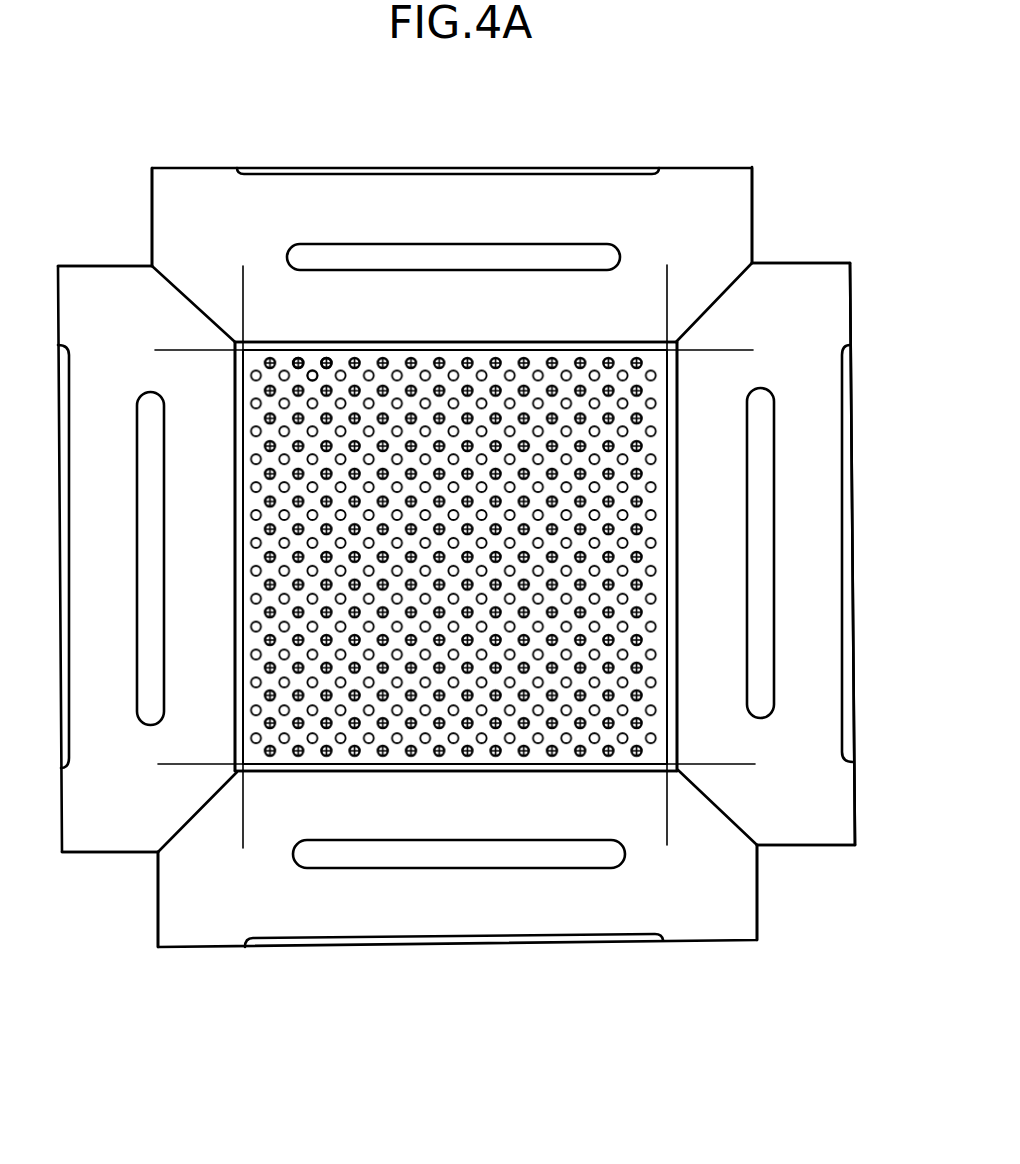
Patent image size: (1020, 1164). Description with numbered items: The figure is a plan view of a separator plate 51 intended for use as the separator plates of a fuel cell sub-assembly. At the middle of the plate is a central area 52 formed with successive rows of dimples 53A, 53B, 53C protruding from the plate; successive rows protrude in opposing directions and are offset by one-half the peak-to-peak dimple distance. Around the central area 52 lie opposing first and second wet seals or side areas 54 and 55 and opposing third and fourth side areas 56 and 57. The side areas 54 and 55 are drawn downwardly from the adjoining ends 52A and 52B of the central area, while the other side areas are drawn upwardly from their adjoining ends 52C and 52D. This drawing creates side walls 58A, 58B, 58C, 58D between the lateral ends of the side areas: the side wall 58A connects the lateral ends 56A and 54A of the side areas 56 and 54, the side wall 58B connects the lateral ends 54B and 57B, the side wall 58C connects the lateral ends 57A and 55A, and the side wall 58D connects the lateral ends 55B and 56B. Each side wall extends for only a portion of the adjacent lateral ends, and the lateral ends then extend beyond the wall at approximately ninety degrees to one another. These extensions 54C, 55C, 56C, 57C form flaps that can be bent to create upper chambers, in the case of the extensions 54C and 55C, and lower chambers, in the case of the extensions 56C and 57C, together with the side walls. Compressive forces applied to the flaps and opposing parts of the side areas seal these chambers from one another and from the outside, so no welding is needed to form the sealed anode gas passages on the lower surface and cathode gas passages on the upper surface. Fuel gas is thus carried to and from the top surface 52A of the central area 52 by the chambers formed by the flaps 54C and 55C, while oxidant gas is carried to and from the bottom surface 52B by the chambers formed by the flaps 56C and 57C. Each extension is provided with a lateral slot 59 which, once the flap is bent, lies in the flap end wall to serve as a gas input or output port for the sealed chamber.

The separator plate 51 is at (543, 151).
The central area 52 is at (484, 355).
The adjoining end of central area 52A is at (578, 347).
The adjoining end of central area 52B is at (493, 768).
The adjoining end of central area 52C is at (238, 378).
The adjoining end of central area 52D is at (668, 378).
The dimple 53A is at (296, 359).
The dimple 53B is at (312, 370).
The dimple 53C is at (327, 359).
The first side area 54 is at (455, 280).
The lateral end of side area 54 54A is at (183, 255).
The lateral end of side area 54 54B is at (725, 235).
The extension 54C is at (288, 184).
The second side area 55 is at (183, 925).
The lateral end of side area 55 55A is at (740, 897).
The lateral end of side area 55 55B is at (180, 909).
The extension 55C is at (250, 925).
The third side area 56 is at (87, 387).
The lateral end of side area 56 56A is at (178, 296).
The lateral end of side area 56 56B is at (137, 810).
The extension 56C is at (120, 565).
The fourth side area 57 is at (740, 568).
The lateral end of side area 57 57A is at (785, 820).
The lateral end of side area 57 57B is at (773, 285).
The extension 57C is at (835, 315).
The side wall 58A is at (165, 288).
The side wall 58B is at (740, 266).
The side wall 58C is at (702, 790).
The side wall 58D is at (216, 797).
The lateral slot 59 is at (560, 262).